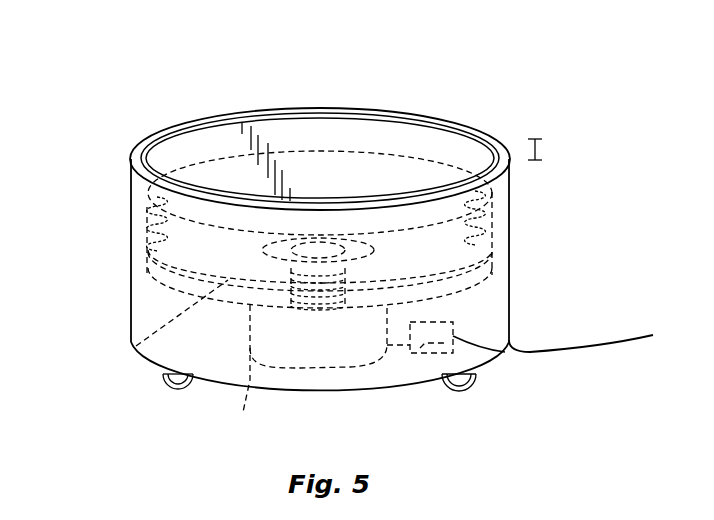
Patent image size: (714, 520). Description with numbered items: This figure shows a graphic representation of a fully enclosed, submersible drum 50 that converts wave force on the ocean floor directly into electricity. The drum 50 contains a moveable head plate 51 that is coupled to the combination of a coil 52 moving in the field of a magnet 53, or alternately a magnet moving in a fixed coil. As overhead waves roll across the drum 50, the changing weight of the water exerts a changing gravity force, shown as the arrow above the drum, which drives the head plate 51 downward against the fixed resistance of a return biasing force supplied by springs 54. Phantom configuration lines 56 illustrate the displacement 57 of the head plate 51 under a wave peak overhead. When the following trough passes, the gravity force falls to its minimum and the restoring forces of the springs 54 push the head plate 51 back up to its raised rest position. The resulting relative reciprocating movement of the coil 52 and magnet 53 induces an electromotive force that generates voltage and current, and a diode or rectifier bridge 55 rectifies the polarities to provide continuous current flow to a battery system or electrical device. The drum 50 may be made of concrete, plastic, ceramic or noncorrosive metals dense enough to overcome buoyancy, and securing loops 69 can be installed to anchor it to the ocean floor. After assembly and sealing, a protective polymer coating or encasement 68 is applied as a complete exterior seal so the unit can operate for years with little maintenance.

The submersible drum 50 is at (503, 118).
The moveable head plate 51 is at (355, 135).
The coil 52 is at (133, 345).
The magnet 53 is at (261, 341).
The springs 54 is at (142, 218).
The diode or rectifier bridge 55 is at (420, 384).
The phantom configuration lines 56 is at (405, 230).
The displacement 57 is at (538, 151).
The protective polymer coating or encasement 68 is at (138, 190).
The securing loops 69 is at (478, 378).